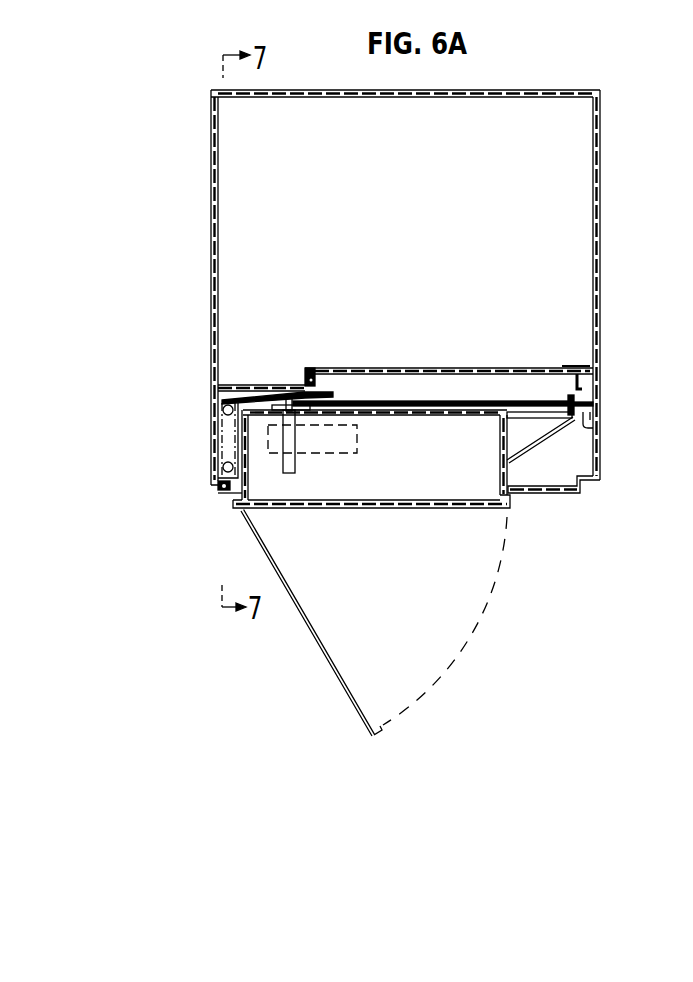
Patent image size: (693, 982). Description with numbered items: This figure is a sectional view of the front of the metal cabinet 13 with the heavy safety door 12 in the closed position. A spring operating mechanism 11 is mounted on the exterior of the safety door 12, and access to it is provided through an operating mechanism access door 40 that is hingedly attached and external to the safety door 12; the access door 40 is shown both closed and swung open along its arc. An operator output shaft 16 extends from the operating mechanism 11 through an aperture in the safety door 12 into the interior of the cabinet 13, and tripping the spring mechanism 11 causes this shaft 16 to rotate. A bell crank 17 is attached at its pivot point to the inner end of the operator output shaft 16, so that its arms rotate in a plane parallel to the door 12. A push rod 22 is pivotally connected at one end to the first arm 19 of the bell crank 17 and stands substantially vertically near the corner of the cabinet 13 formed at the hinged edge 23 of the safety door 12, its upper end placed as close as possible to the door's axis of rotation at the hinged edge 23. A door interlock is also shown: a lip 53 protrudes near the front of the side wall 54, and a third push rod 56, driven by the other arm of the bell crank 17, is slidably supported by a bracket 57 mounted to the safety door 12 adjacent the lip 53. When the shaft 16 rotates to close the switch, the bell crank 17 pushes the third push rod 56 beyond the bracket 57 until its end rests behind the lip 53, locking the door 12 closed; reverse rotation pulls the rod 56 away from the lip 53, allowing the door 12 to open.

The spring operating mechanism 11 is at (357, 450).
The safety door 12 is at (457, 417).
The metal cabinet 13 is at (198, 164).
The operator output shaft 16 is at (289, 474).
The bell crank 17 is at (324, 392).
The first arm 19 is at (244, 397).
The push rod 22 is at (226, 432).
The hinged edge 23 is at (222, 491).
The operating mechanism access door 40 is at (355, 509).
The lip 53 is at (593, 427).
The side wall 54 is at (600, 330).
The third push rod 56 is at (593, 401).
The bracket 57 is at (567, 396).